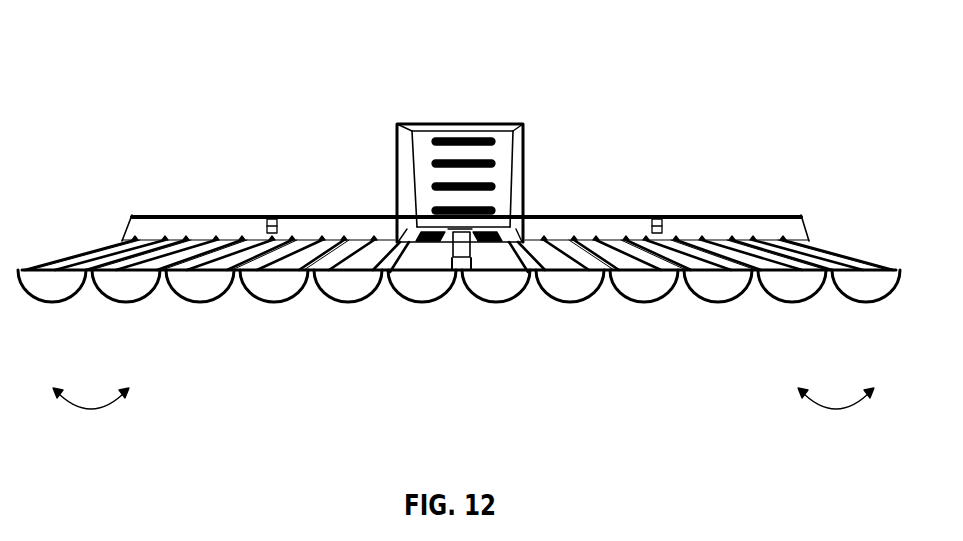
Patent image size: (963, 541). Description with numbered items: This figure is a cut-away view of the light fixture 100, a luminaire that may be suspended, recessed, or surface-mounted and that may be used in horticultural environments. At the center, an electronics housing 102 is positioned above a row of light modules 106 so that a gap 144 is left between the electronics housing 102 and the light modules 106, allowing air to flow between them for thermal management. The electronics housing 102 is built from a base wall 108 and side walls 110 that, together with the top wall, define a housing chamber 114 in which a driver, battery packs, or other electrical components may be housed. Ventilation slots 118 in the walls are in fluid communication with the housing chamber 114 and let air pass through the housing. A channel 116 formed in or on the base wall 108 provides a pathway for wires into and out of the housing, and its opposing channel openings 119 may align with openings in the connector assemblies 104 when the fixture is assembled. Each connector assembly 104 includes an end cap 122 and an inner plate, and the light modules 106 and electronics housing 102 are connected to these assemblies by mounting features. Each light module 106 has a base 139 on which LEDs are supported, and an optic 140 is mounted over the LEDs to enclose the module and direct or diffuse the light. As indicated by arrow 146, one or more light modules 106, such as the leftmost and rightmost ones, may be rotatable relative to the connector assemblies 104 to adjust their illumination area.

The light fixture 100 is at (745, 41).
The electronics housing 102 is at (486, 133).
The connector assembly 104 is at (780, 223).
The light module 106 is at (274, 296).
The base wall 108 is at (447, 255).
The side wall 110 is at (410, 173).
The housing chamber 114 is at (418, 142).
The channel 116 is at (462, 258).
The ventilation slots 118 is at (449, 138).
The channel opening 119 is at (460, 228).
The end cap 122 is at (587, 228).
The base 139 is at (247, 252).
The optic 140 is at (60, 296).
The gap 144 is at (514, 275).
The arrow 146 is at (103, 404).